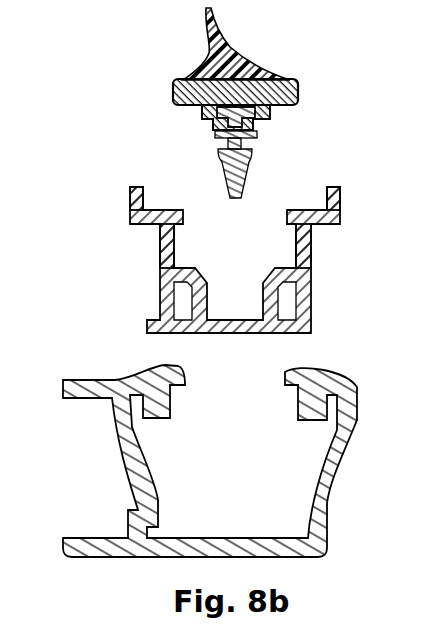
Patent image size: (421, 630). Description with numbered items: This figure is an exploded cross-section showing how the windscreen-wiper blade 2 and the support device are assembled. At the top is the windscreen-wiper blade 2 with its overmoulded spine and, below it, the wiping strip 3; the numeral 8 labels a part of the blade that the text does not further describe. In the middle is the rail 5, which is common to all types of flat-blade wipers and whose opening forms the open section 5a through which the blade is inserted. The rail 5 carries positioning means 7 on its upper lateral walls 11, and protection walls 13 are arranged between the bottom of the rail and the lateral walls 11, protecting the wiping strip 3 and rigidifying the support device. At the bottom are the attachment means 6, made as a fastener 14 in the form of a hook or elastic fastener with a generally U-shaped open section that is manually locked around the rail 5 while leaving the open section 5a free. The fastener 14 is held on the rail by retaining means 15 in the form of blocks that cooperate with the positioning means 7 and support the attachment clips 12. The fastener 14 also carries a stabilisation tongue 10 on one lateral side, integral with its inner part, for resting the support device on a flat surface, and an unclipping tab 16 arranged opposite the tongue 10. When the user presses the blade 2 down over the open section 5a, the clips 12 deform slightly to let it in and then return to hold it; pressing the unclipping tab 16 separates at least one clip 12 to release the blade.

The windscreen-wiper blade 2 is at (227, 66).
The cap flange / disc 8 is at (199, 81).
The wiping strip 3 is at (252, 166).
The rail 5 is at (252, 239).
The open section 5a is at (207, 212).
The positioning means 7 is at (133, 196).
The lateral walls 11 is at (160, 240).
The protection walls 13 is at (263, 301).
The attachment means 6 is at (198, 436).
The attachment clips 12 is at (170, 372).
The retaining means 15 is at (307, 405).
The unclipping tab 16 is at (77, 386).
The stabilisation tongue 10 is at (75, 545).
The fastener 14 is at (318, 502).